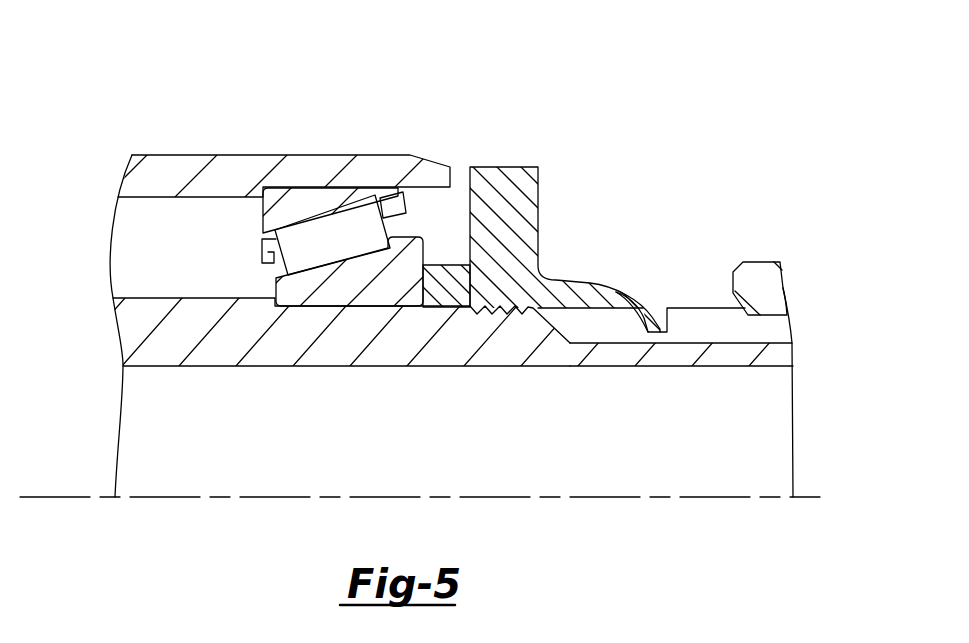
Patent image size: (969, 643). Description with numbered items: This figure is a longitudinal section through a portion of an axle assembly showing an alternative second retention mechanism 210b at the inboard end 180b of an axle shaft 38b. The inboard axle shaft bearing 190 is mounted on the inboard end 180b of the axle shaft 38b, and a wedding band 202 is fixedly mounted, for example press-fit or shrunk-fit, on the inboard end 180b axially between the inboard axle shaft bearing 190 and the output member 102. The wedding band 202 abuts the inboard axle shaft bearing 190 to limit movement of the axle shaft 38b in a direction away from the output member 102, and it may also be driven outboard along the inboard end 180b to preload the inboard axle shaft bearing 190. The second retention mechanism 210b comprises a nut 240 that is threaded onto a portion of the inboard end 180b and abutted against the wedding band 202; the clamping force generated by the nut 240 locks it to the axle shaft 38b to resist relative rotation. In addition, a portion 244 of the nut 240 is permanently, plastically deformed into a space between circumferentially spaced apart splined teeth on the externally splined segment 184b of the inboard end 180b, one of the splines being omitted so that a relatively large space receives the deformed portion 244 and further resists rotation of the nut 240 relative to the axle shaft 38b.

The axle shaft 38b is at (265, 358).
The inboard end of the axle shaft 180b is at (574, 372).
The externally splined segment 184b is at (733, 337).
The output member 102 is at (697, 313).
The inboard axle shaft bearing 190 is at (303, 203).
The wedding band 202 is at (440, 267).
The nut 240 is at (511, 175).
The deformed portion of the nut 244 is at (648, 293).
The second retention mechanism 210b is at (580, 198).